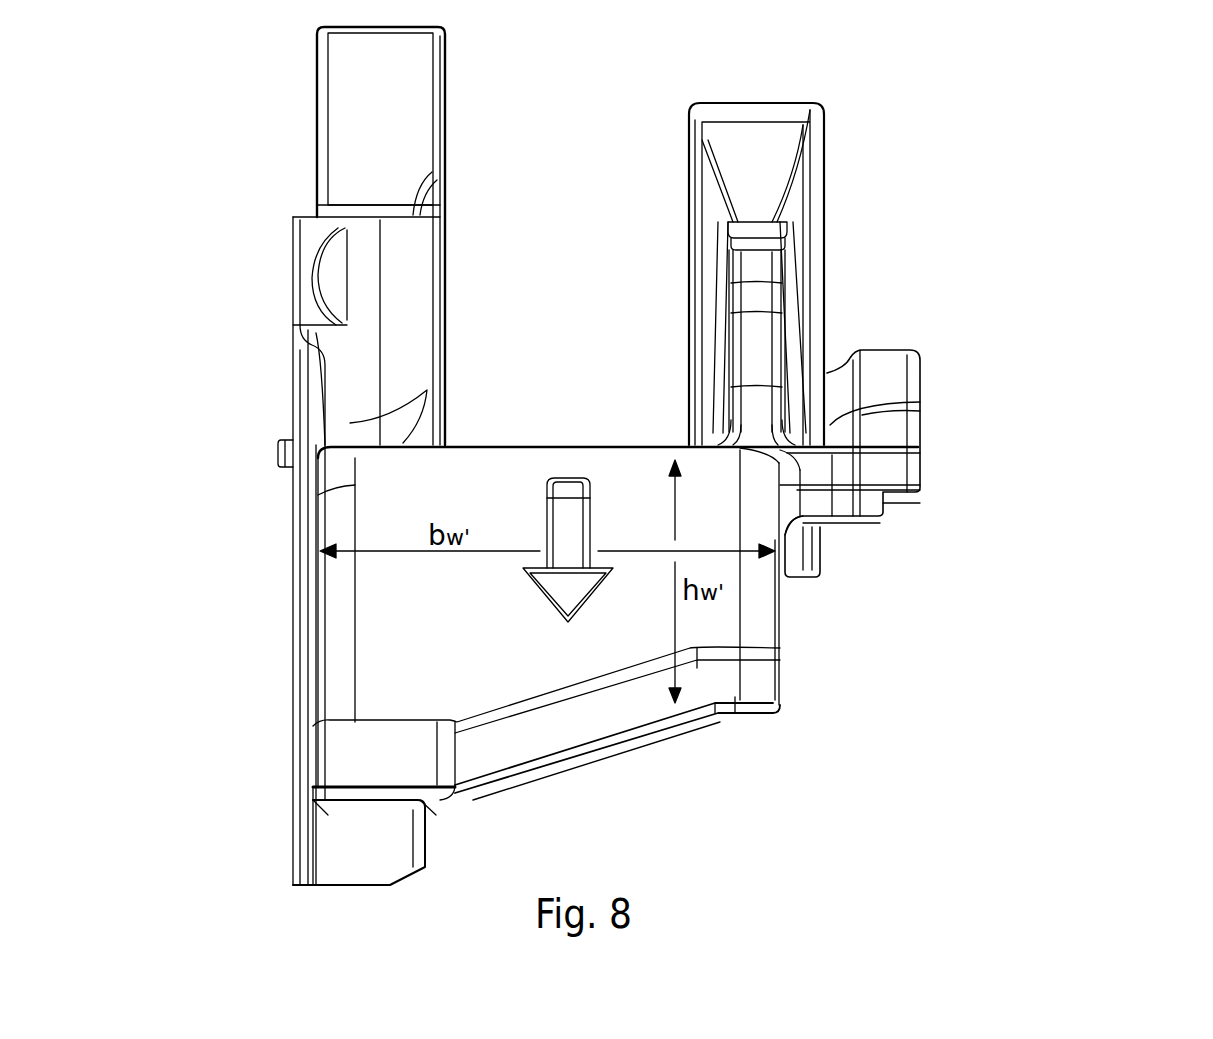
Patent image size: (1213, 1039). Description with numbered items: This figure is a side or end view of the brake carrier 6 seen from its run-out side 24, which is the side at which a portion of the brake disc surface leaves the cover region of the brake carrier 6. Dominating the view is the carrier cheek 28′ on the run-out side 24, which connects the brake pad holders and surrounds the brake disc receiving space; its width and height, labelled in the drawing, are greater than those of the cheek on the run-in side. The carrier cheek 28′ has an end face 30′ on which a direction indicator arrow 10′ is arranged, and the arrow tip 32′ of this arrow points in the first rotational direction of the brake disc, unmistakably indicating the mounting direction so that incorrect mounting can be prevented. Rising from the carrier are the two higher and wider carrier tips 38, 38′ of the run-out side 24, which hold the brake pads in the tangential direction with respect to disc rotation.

The brake carrier 6 is at (1111, 192).
The direction indicator arrow 10′ is at (587, 597).
The run-out side 24 is at (500, 803).
The carrier cheek 28′ is at (795, 652).
The end face 30′ is at (717, 613).
The arrow tip 32′ is at (556, 625).
The carrier tip 38 is at (770, 140).
The carrier tip 38′ is at (352, 84).